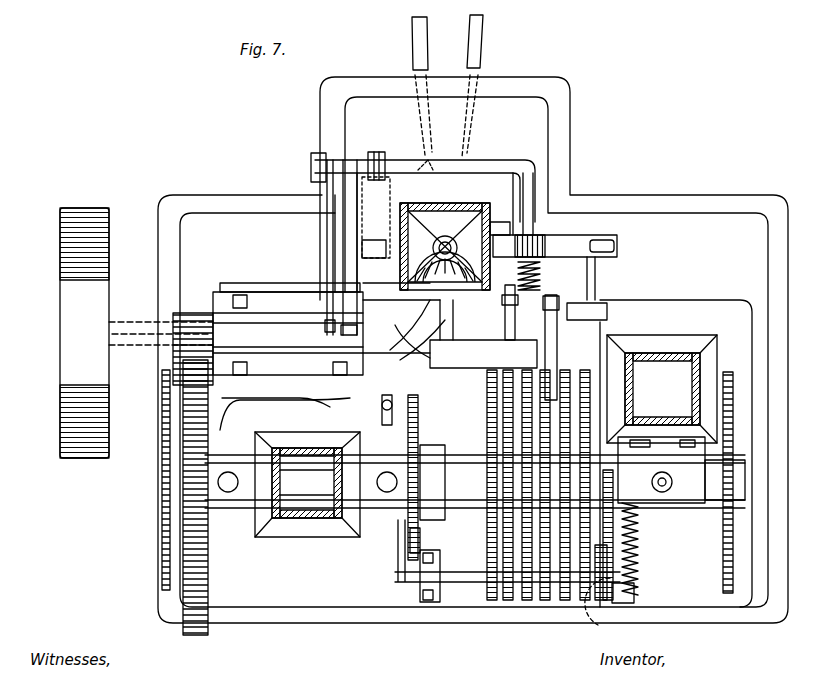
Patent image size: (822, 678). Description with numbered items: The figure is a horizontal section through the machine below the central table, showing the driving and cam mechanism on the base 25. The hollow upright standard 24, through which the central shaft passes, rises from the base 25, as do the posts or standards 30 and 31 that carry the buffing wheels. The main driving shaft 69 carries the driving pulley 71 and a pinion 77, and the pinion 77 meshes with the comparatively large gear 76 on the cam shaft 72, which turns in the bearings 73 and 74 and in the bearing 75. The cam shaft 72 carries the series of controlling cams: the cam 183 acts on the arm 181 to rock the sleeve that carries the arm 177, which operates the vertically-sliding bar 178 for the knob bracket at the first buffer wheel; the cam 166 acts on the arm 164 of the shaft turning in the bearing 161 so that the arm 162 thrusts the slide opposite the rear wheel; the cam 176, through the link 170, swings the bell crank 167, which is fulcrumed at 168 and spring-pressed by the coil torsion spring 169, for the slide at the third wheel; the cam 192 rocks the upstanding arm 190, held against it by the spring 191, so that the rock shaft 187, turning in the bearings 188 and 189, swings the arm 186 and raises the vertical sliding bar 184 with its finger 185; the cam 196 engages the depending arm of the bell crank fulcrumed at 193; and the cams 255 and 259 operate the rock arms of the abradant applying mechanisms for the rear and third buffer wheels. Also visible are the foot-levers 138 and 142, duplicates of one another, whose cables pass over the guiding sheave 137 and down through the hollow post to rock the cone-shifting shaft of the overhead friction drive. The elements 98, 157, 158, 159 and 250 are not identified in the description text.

The hollow upright standard 24 is at (480, 195).
The base 25 is at (679, 253).
The post or standard 30 is at (700, 368).
The post or standard 31 is at (320, 537).
The main driving shaft 69 is at (133, 322).
The driving pulley 71 is at (60, 322).
The cam shaft 72 is at (307, 537).
The bearing 73 is at (228, 515).
The bearing 74 is at (395, 525).
The bearing 75 is at (695, 503).
The large gear 76 is at (208, 600).
The pinion 77 is at (190, 313).
The pinion 98 is at (421, 542).
The guiding sheave 137 is at (424, 200).
The foot-lever 138 is at (412, 42).
The foot-lever 142 is at (486, 42).
The bracket 157 is at (325, 325).
The gear 158 is at (495, 430).
The shaft 159 is at (528, 600).
The bearing 161 is at (595, 290).
The arm 162 is at (392, 400).
The arm 164 is at (600, 330).
The cam 166 is at (508, 600).
The bell crank 167 is at (548, 244).
The fulcrum 168 is at (560, 213).
The coil torsion spring 169 is at (540, 275).
The link 170 is at (614, 243).
The cam 176 is at (570, 600).
The arm 177 is at (345, 243).
The vertically-sliding bar 178 is at (322, 178).
The arm 181 is at (490, 395).
The cam 183 is at (492, 600).
The vertical sliding bar 184 is at (345, 408).
The finger 185 is at (360, 392).
The arm 186 is at (400, 575).
The rock shaft 187 is at (460, 582).
The bearing 188 is at (420, 590).
The bearing 189 is at (612, 622).
The upstanding arm 190 is at (634, 598).
The spring 191 is at (664, 570).
The cam 192 is at (615, 530).
The fulcrum 193 is at (633, 388).
The cam 196 is at (640, 545).
The rack 250 is at (162, 528).
The cam 255 is at (440, 560).
The cam 259 is at (710, 412).